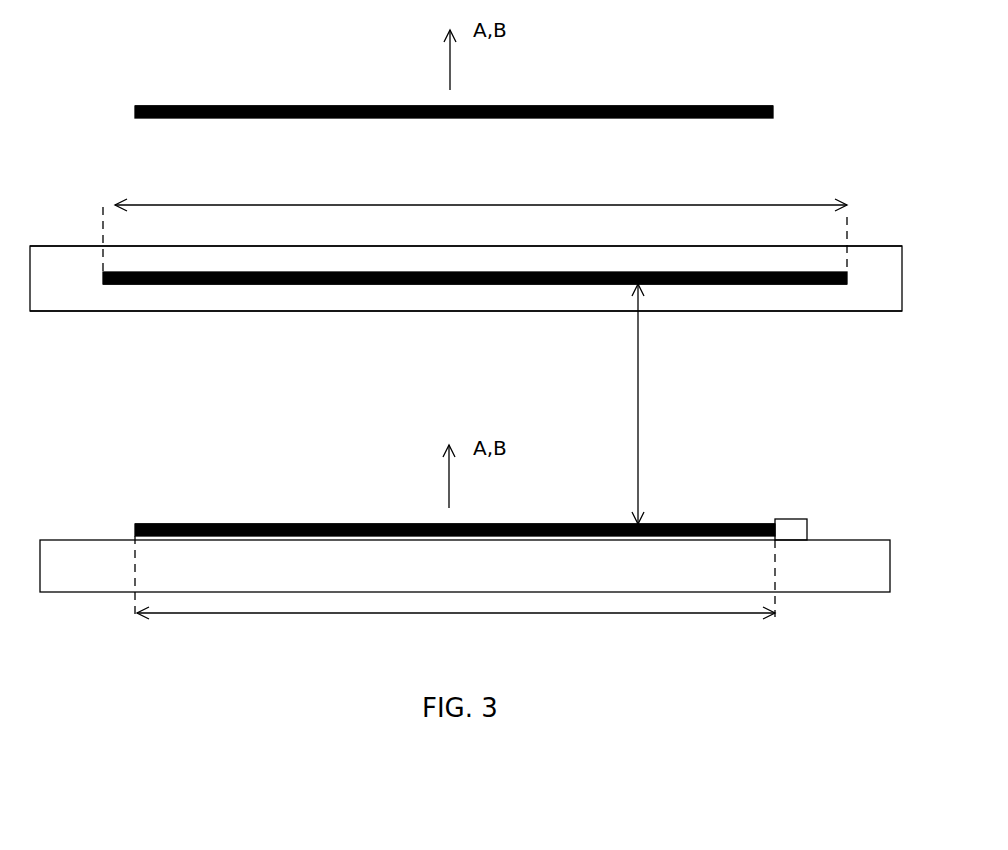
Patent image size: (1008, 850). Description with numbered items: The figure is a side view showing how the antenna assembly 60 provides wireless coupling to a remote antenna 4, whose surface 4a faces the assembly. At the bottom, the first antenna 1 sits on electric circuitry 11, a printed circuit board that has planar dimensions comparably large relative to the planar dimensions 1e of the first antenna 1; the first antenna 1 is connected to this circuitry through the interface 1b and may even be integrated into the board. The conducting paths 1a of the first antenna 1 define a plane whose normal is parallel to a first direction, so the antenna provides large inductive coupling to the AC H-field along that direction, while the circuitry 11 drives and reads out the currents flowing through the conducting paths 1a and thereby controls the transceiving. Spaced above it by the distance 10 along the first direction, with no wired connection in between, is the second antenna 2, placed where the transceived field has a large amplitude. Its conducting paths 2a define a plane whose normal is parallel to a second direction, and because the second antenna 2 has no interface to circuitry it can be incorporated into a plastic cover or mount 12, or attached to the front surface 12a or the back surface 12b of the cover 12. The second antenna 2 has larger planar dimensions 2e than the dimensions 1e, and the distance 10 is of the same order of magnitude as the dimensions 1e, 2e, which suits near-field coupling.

The first antenna 1 is at (133, 518).
The conducting paths 1a is at (272, 524).
The interface 1b is at (796, 530).
The planar dimensions 1e is at (272, 613).
The second antenna 2 is at (101, 268).
The conducting paths 2a is at (272, 284).
The planar dimensions 2e is at (303, 205).
The remote antenna 4 is at (133, 103).
The surface of third substrate 4a is at (271, 106).
The distance 10 is at (638, 373).
The electric circuitry 11 is at (848, 552).
The cover 12 is at (816, 297).
The front surface 12a is at (879, 246).
The back surface 12b is at (333, 311).
The antenna assembly 60 is at (105, 352).